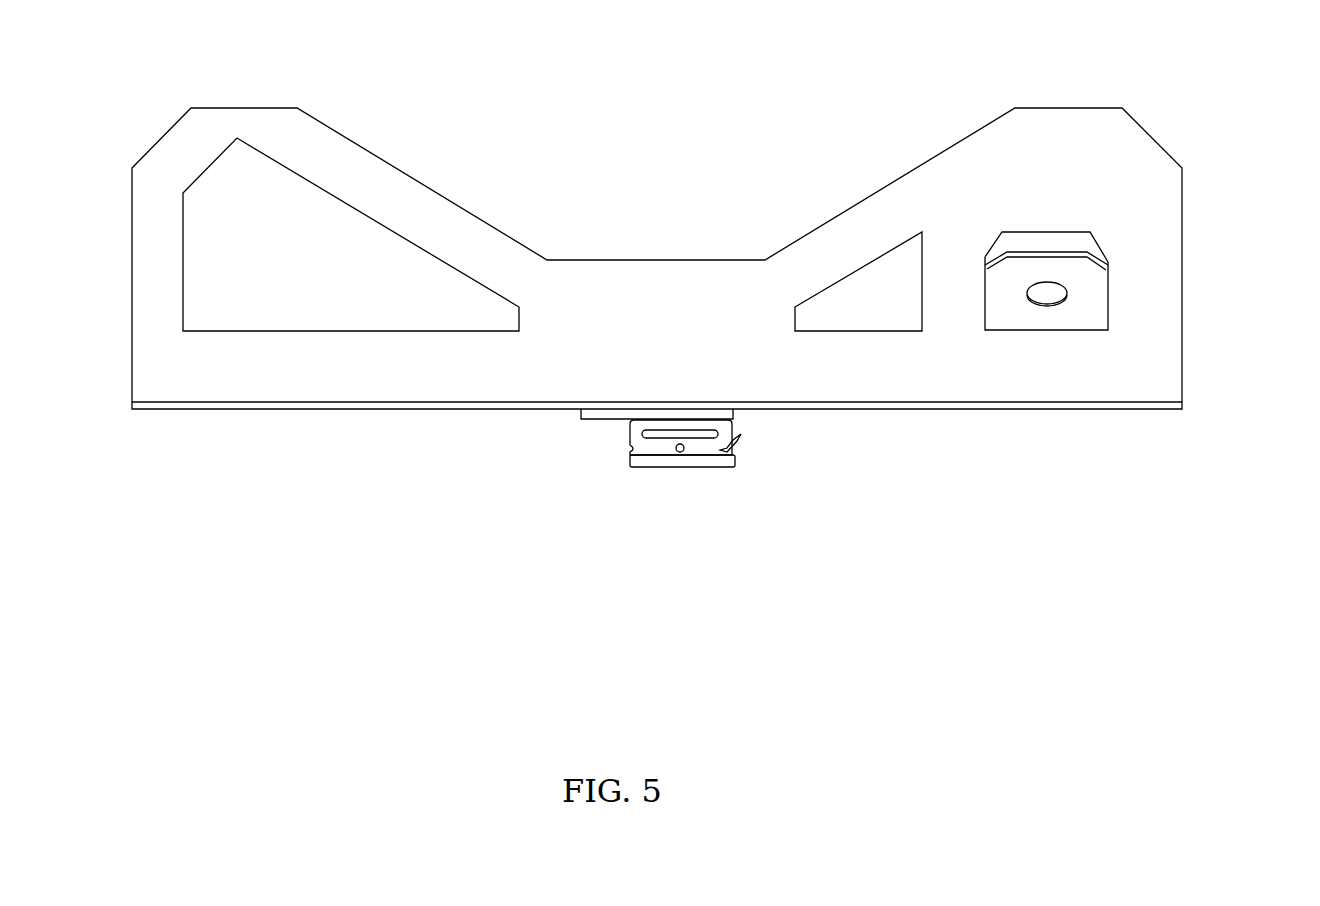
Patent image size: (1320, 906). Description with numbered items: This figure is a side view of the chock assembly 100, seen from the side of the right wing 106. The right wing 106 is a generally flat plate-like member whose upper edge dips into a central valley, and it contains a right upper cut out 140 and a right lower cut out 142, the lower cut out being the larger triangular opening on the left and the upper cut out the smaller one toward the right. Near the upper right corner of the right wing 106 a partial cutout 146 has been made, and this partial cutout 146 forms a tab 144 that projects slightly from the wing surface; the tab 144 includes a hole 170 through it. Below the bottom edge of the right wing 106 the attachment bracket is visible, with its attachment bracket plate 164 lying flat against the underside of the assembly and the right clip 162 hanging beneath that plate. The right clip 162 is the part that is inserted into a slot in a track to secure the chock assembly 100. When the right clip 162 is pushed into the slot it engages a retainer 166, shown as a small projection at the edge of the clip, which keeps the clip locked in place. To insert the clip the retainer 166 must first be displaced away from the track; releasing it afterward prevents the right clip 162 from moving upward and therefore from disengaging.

The chock assembly 100 is at (702, 279).
The right wing 106 is at (1140, 293).
The right upper cut out 140 is at (870, 290).
The right lower cut out 142 is at (283, 295).
The tab 144 is at (1090, 270).
The partial cutout 146 is at (1005, 245).
The hole 170 is at (1047, 305).
The right clip 162 is at (643, 462).
The attachment bracket plate 164 is at (735, 414).
The retainer 166 is at (738, 440).